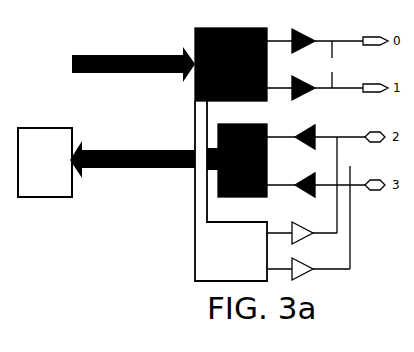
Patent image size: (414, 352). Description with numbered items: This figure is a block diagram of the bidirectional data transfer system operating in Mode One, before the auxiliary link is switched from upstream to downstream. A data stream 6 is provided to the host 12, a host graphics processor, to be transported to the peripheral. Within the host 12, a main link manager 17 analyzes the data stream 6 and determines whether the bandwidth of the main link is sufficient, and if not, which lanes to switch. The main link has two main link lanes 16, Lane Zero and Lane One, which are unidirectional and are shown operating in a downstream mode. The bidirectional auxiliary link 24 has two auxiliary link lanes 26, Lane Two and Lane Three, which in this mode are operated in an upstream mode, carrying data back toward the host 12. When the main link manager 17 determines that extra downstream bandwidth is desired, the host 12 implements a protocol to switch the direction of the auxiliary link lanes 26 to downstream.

The data stream 6 is at (72, 55).
The main link manager 17 is at (195, 31).
The host 12 is at (47, 128).
The bidirectional auxiliary link 24 is at (265, 124).
The main link lanes 16 is at (332, 64).
The auxiliary link lanes 26 is at (338, 138).